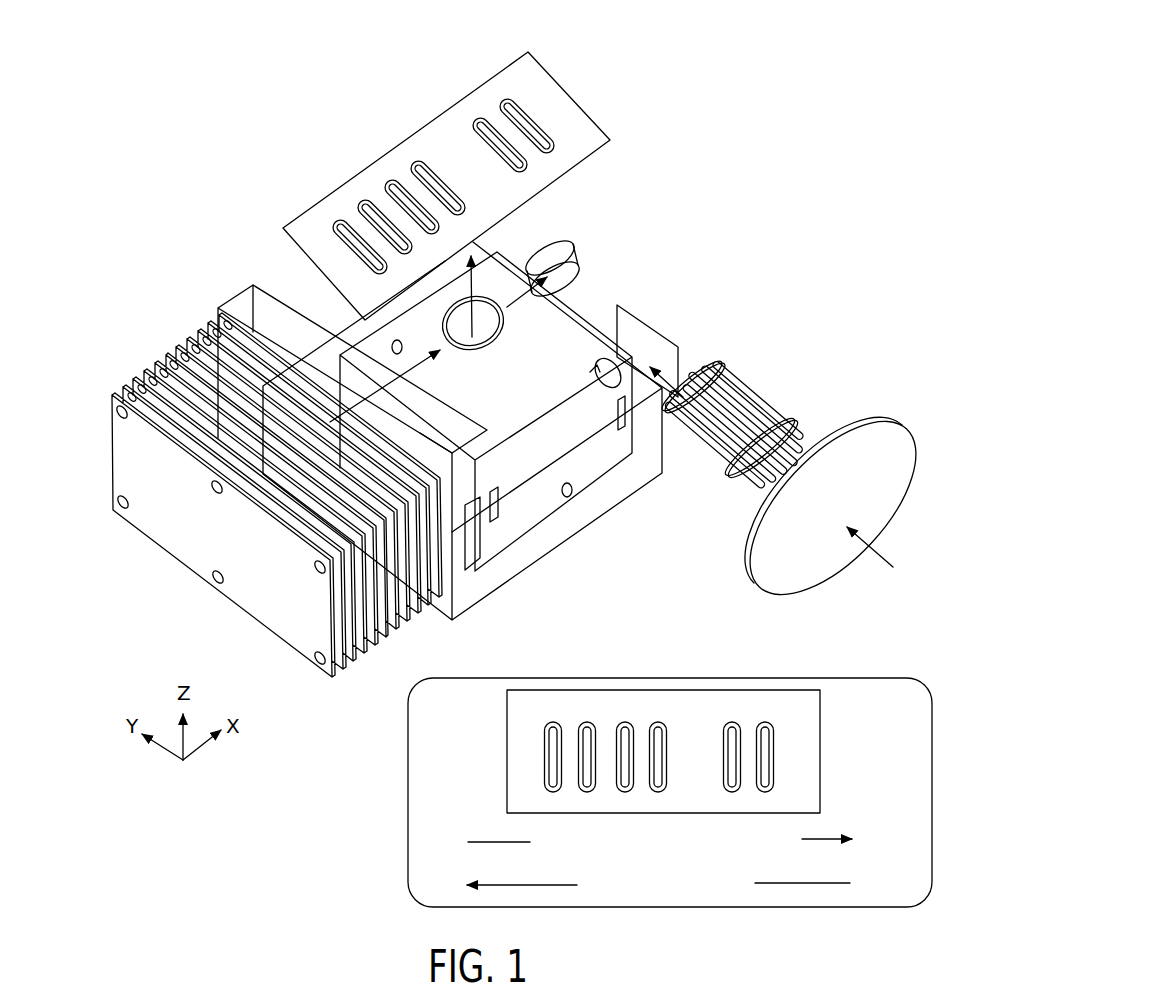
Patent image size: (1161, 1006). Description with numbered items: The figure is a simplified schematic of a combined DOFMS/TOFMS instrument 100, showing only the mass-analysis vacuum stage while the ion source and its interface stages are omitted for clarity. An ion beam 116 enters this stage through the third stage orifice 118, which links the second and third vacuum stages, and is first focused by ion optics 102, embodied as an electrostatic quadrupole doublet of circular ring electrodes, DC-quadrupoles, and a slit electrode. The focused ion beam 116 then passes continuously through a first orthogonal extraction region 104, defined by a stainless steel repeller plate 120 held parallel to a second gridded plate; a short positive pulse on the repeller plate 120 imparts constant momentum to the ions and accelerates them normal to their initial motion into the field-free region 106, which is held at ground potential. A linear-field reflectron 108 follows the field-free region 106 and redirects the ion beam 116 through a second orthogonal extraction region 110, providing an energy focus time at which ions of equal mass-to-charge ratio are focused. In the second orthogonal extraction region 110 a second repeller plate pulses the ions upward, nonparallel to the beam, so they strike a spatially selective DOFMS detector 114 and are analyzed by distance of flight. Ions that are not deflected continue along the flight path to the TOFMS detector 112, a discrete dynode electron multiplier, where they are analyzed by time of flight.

The combined DOFMS/TOFMS instrument 100 is at (781, 69).
The ion optics 102 is at (732, 478).
The first orthogonal extraction region 104 is at (628, 353).
The field-free region 106 is at (462, 418).
The reflectron 108 is at (185, 563).
The second orthogonal extraction region 110 is at (445, 433).
The TOFMS detector 112 is at (567, 260).
The DOFMS detector 114 is at (433, 127).
The ion beam 116 is at (523, 423).
The third stage orifice 118 is at (775, 592).
The repeller plate 120 is at (667, 353).